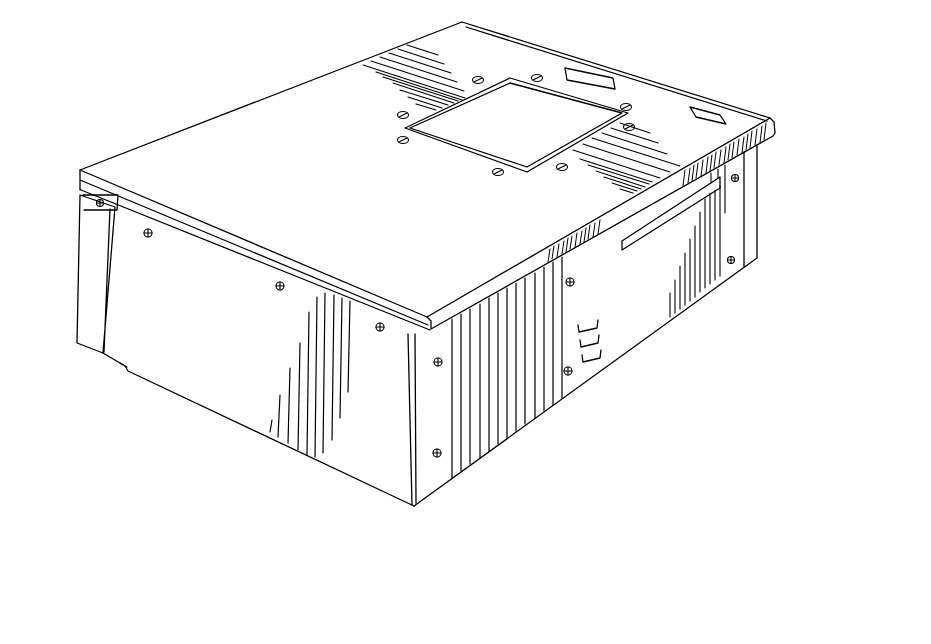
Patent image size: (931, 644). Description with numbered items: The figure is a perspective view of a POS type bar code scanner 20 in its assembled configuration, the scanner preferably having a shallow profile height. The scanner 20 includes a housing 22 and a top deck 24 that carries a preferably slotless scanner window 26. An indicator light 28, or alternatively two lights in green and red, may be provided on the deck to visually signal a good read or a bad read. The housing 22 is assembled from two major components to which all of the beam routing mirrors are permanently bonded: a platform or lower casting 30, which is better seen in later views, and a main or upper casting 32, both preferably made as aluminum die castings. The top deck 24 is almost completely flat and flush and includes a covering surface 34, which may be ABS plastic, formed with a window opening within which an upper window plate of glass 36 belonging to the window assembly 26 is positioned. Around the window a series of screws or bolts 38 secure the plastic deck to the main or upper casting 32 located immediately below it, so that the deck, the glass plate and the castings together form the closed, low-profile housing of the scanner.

The POS type bar code scanner 20 is at (333, 46).
The housing 22 is at (753, 114).
The top deck 24 is at (163, 162).
The scanner window 26 is at (508, 106).
The indicator light 28 is at (707, 112).
The lower casting 30 is at (107, 366).
The upper casting 32 is at (84, 245).
The covering surface 34 is at (401, 203).
The upper window plate of glass 36 is at (580, 127).
The screws or bolts 38 is at (398, 139).